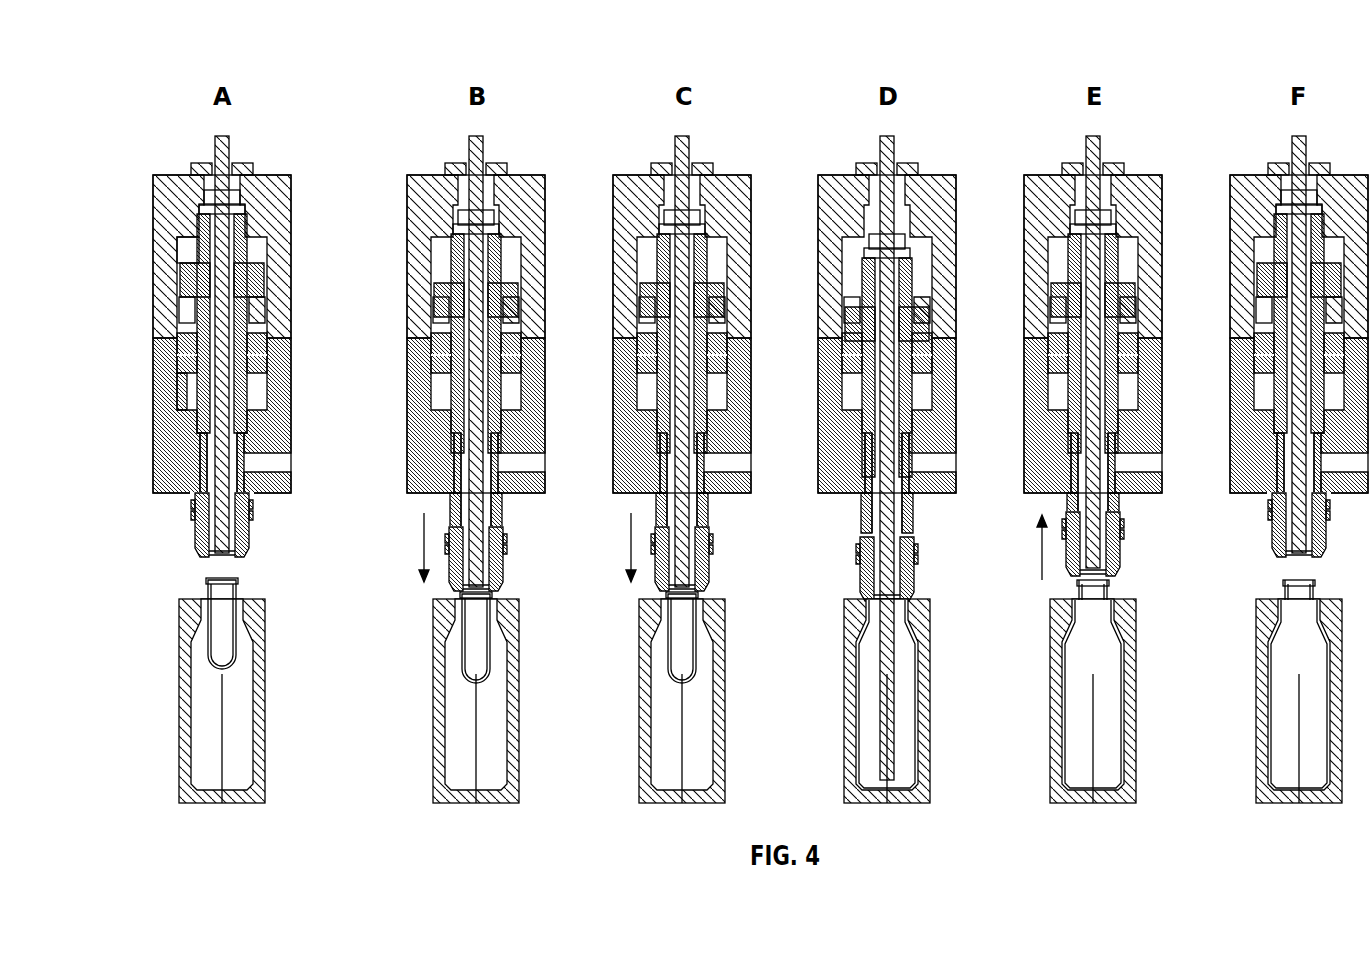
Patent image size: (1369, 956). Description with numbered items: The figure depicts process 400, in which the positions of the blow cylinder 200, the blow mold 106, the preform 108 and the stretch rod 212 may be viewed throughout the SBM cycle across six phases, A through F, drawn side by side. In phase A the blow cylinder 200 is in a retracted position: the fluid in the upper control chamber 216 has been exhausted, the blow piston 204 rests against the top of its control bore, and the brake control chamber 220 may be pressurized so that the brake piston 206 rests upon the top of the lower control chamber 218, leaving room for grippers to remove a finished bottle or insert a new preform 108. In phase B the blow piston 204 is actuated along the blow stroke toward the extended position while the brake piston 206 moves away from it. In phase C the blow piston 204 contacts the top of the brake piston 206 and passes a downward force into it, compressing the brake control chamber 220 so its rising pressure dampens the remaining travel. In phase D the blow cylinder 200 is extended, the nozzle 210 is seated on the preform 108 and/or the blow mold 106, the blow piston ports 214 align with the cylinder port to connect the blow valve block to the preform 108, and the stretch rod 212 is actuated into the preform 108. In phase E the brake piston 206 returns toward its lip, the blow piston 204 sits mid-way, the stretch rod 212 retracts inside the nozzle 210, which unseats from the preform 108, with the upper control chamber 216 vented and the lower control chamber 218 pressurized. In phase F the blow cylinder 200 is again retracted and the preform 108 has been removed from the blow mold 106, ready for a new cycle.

The process 400 is at (176, 88).
The blow cylinder 200 is at (183, 183).
The blow piston 204 is at (183, 278).
The brake piston 206 is at (183, 353).
The upper control chamber 216 is at (258, 264).
The lower control chamber 218 is at (260, 319).
The brake control chamber 220 is at (262, 372).
The blow piston ports 214 is at (867, 478).
The stretch rod 212 is at (886, 545).
The nozzle 210 is at (857, 568).
The preform 108 is at (237, 583).
The blow mold 106 is at (255, 628).